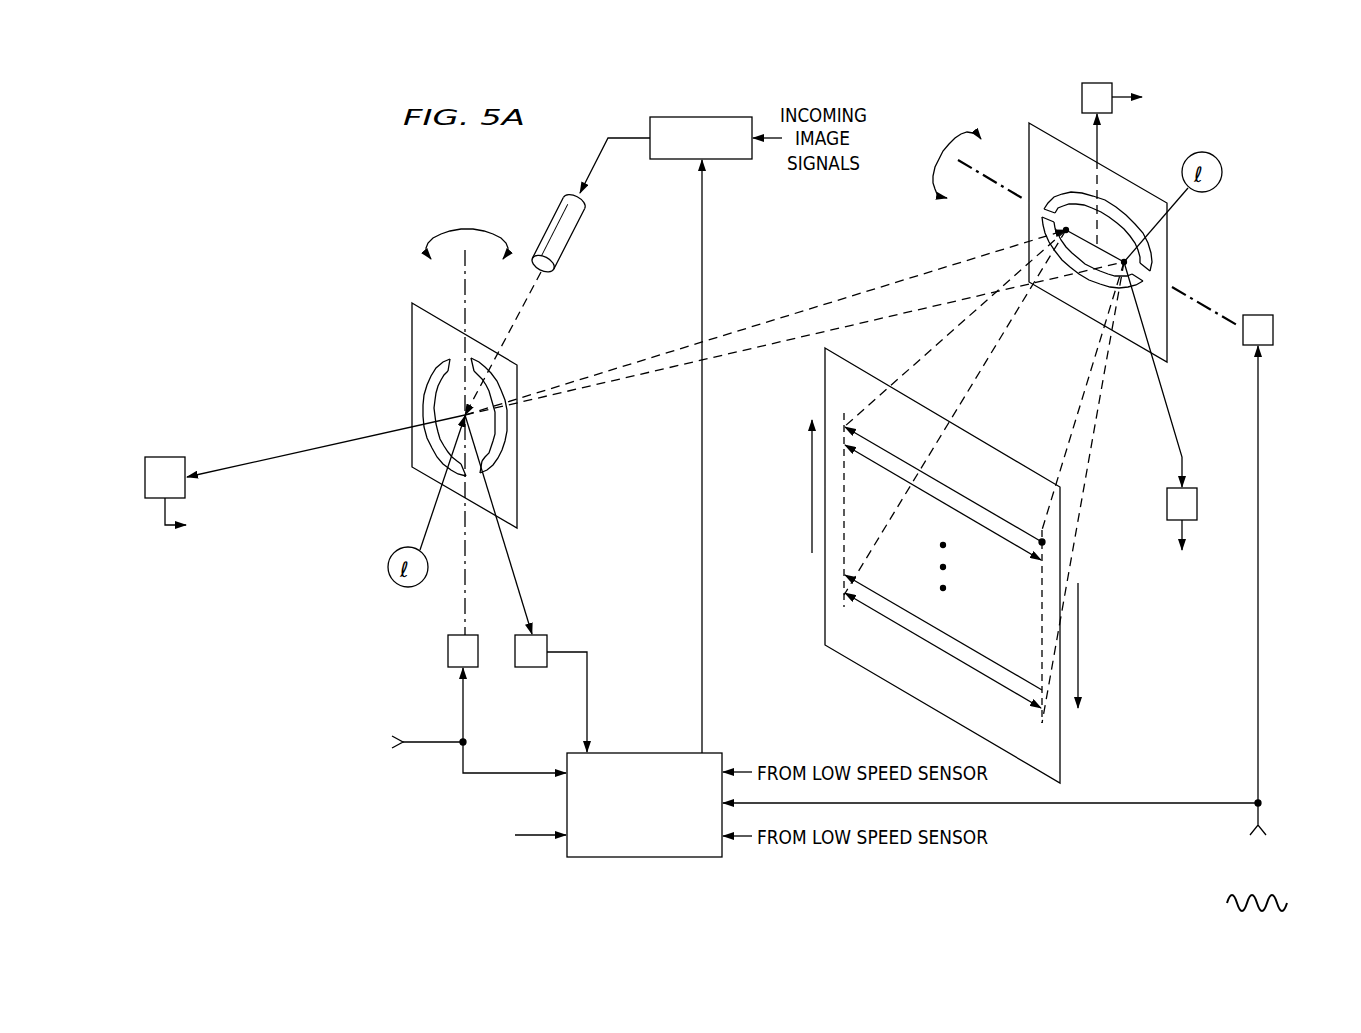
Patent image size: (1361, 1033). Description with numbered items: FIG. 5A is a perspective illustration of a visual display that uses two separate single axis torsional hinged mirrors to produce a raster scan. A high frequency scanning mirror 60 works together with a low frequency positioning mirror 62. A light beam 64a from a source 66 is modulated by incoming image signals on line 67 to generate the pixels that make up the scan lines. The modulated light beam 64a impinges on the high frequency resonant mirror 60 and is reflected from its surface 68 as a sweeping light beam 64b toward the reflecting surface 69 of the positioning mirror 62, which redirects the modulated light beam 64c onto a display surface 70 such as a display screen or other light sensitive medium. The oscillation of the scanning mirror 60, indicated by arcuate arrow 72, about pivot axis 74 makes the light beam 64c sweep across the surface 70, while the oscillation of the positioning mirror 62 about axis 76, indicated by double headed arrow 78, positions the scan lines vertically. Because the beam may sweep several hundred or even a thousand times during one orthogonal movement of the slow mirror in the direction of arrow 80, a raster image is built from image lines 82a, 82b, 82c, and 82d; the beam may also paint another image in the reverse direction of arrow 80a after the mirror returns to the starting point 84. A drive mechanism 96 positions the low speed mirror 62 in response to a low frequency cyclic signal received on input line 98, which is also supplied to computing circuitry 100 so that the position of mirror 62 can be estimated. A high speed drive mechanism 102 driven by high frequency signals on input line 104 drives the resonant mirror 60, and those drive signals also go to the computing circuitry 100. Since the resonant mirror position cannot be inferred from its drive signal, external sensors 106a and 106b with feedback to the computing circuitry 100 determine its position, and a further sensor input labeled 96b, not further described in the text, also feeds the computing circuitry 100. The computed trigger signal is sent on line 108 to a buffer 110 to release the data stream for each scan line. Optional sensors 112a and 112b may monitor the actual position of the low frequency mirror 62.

The high frequency scanning single axis torsional hinged mirror 60 is at (385, 338).
The low frequency positioning single axis torsional hinged mirror 62 is at (1183, 243).
The light beam 64a is at (532, 288).
The sweeping light beam 64b is at (920, 273).
The modulated light beam 64c is at (920, 363).
The source 66 is at (548, 223).
The line 67 is at (632, 138).
The surface 68 is at (447, 400).
The reflecting surface 69 is at (1103, 227).
The display surface 70 is at (890, 672).
The arcuate arrow 72 is at (447, 228).
The pivot axis 74 is at (468, 305).
The axis 76 is at (1007, 192).
The double headed arrow 78 is at (957, 127).
The arrow 80 is at (1080, 650).
The arrow 80a is at (810, 487).
The image line 82a is at (950, 488).
The image line 82b is at (1003, 543).
The image line 82c is at (1010, 642).
The image line 82d is at (922, 642).
The starting point 84 is at (1040, 538).
The drive mechanism 96 is at (1275, 327).
The sensor signal to computing circuitry 96b is at (537, 837).
The input line 98 is at (1260, 688).
The computing circuitry 100 is at (633, 857).
The high speed drive mechanism 102 is at (447, 653).
The input line 104 is at (432, 738).
The external sensor 106a is at (532, 668).
The sensor 106b is at (160, 457).
The line 108 is at (698, 487).
The buffer 110 is at (717, 117).
The sensor 112a is at (1082, 93).
The sensor 112b is at (1167, 503).